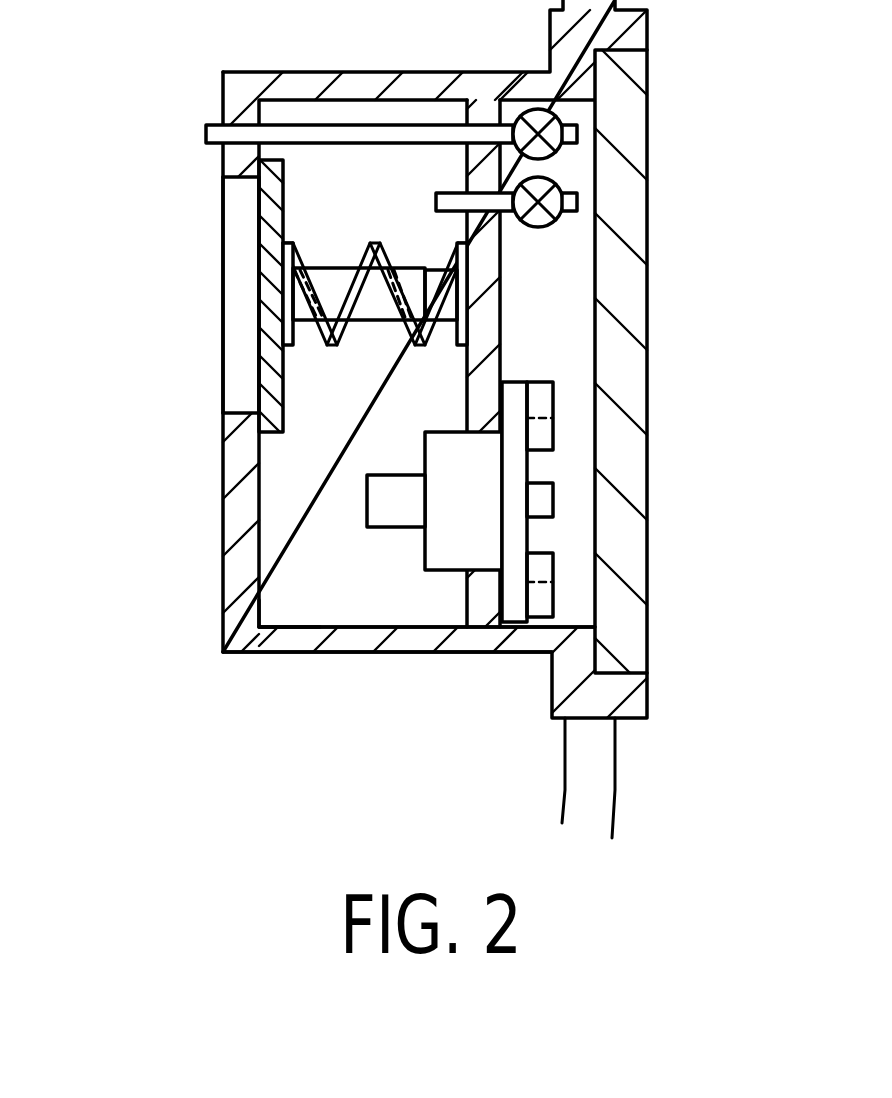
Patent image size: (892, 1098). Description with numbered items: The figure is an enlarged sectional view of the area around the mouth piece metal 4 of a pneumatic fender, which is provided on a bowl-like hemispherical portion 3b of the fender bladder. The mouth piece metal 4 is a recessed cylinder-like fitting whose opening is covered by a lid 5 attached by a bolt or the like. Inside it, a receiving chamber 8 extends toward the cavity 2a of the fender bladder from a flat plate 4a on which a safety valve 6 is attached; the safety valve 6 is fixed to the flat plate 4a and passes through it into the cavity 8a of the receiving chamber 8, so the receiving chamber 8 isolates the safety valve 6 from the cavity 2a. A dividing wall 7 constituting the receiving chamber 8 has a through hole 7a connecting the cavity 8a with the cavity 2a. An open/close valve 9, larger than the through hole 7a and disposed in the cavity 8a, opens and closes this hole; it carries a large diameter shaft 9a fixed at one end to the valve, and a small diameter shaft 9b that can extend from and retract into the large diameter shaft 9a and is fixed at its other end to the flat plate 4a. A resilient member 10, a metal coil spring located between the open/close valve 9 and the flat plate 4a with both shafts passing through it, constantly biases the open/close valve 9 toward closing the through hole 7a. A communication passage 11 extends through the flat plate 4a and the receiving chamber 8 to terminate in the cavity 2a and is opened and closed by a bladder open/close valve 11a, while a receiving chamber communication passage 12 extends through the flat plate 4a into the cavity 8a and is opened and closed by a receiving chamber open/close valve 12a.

The cavity of the fender bladder 2a is at (160, 658).
The hemispherical portion 3b is at (608, 769).
The mouth piece metal 4 is at (692, 122).
The flat plate 4a is at (482, 392).
The lid 5 is at (644, 387).
The safety valve 6 is at (404, 558).
The dividing wall 7 is at (233, 514).
The through hole 7a is at (233, 405).
The receiving chamber 8 is at (380, 683).
The cavity of the receiving chamber 8a is at (308, 612).
The open/close valve 9 is at (278, 393).
The large diameter shaft 9a is at (344, 275).
The small diameter shaft 9b is at (435, 271).
The resilient member 10 is at (358, 307).
The communication passage 11 is at (214, 140).
The bladder open/close valve 11a is at (540, 118).
The receiving chamber communication passage 12 is at (455, 197).
The receiving chamber open/close valve 12a is at (540, 228).